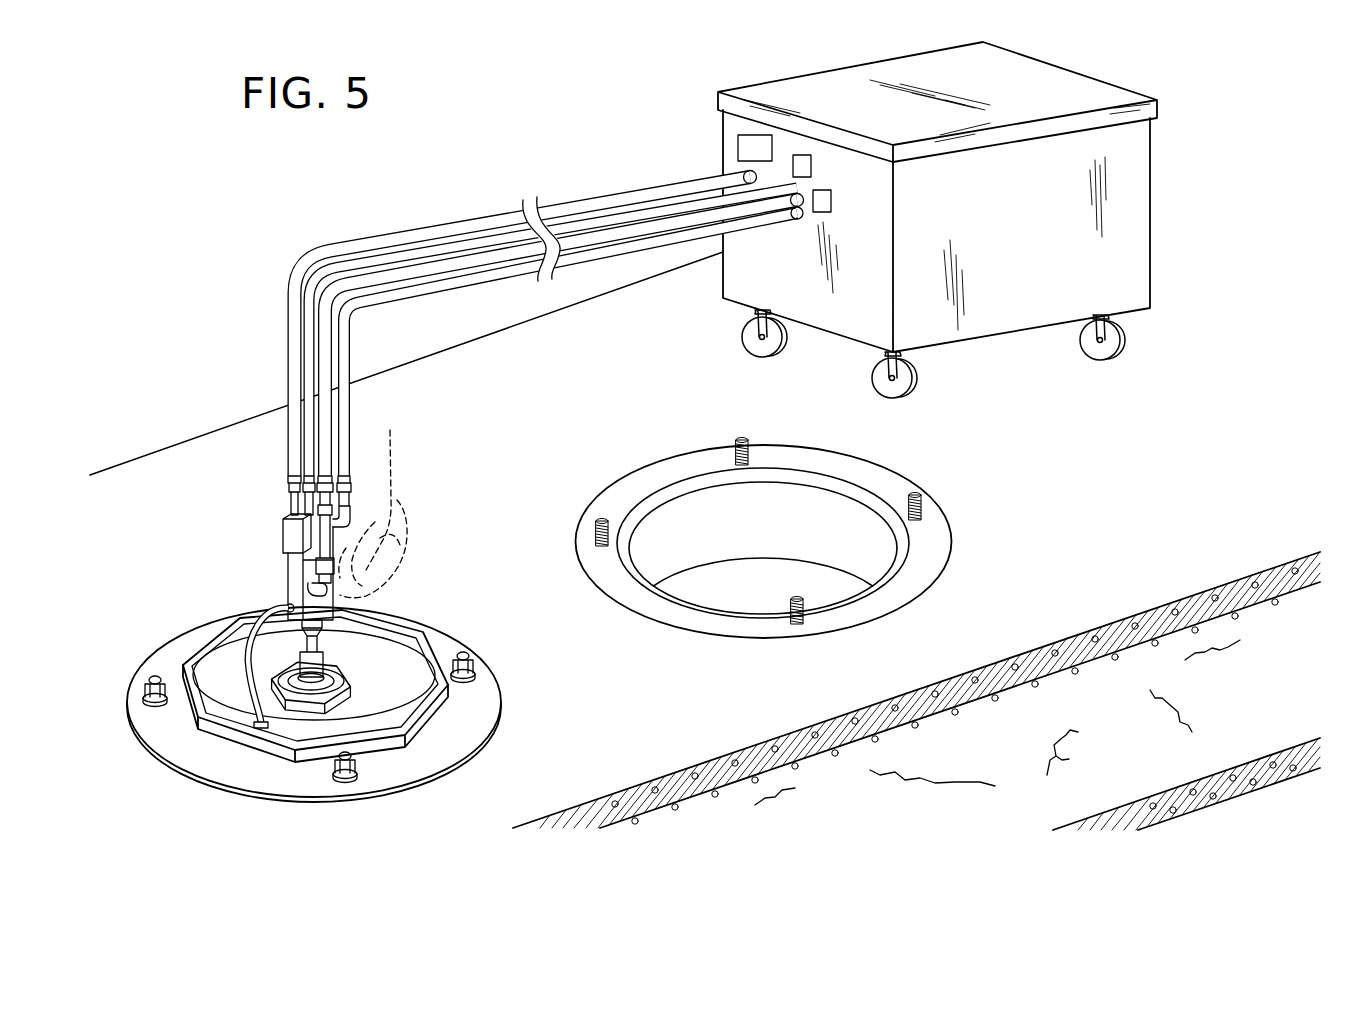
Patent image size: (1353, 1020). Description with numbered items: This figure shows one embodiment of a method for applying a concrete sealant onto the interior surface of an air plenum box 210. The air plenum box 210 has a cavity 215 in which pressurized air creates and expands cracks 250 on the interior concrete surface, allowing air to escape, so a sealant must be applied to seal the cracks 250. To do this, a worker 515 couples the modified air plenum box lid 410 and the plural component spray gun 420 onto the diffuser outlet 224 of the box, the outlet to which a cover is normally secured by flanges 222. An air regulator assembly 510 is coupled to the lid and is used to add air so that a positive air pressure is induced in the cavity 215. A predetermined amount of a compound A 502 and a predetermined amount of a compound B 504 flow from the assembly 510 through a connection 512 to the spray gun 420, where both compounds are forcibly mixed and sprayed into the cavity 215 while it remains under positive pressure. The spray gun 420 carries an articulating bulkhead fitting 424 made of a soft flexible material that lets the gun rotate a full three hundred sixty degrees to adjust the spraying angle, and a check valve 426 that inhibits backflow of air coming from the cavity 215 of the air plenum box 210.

The air regulator assembly 510 is at (782, 85).
The compound A 502 is at (812, 165).
The compound B 504 is at (830, 202).
The connection 512 is at (648, 268).
The diffuser outlet 224 is at (612, 450).
The worker 515 is at (398, 502).
The plural component spray gun 420 is at (278, 537).
The check valve 426 is at (258, 612).
The articulating bulkhead fitting 424 is at (337, 661).
The modified air plenum box lid 410 is at (222, 678).
The flanges 222 is at (428, 648).
The cavity 215 is at (830, 776).
The cracks 250 is at (1070, 762).
The air plenum box 210 is at (1182, 762).